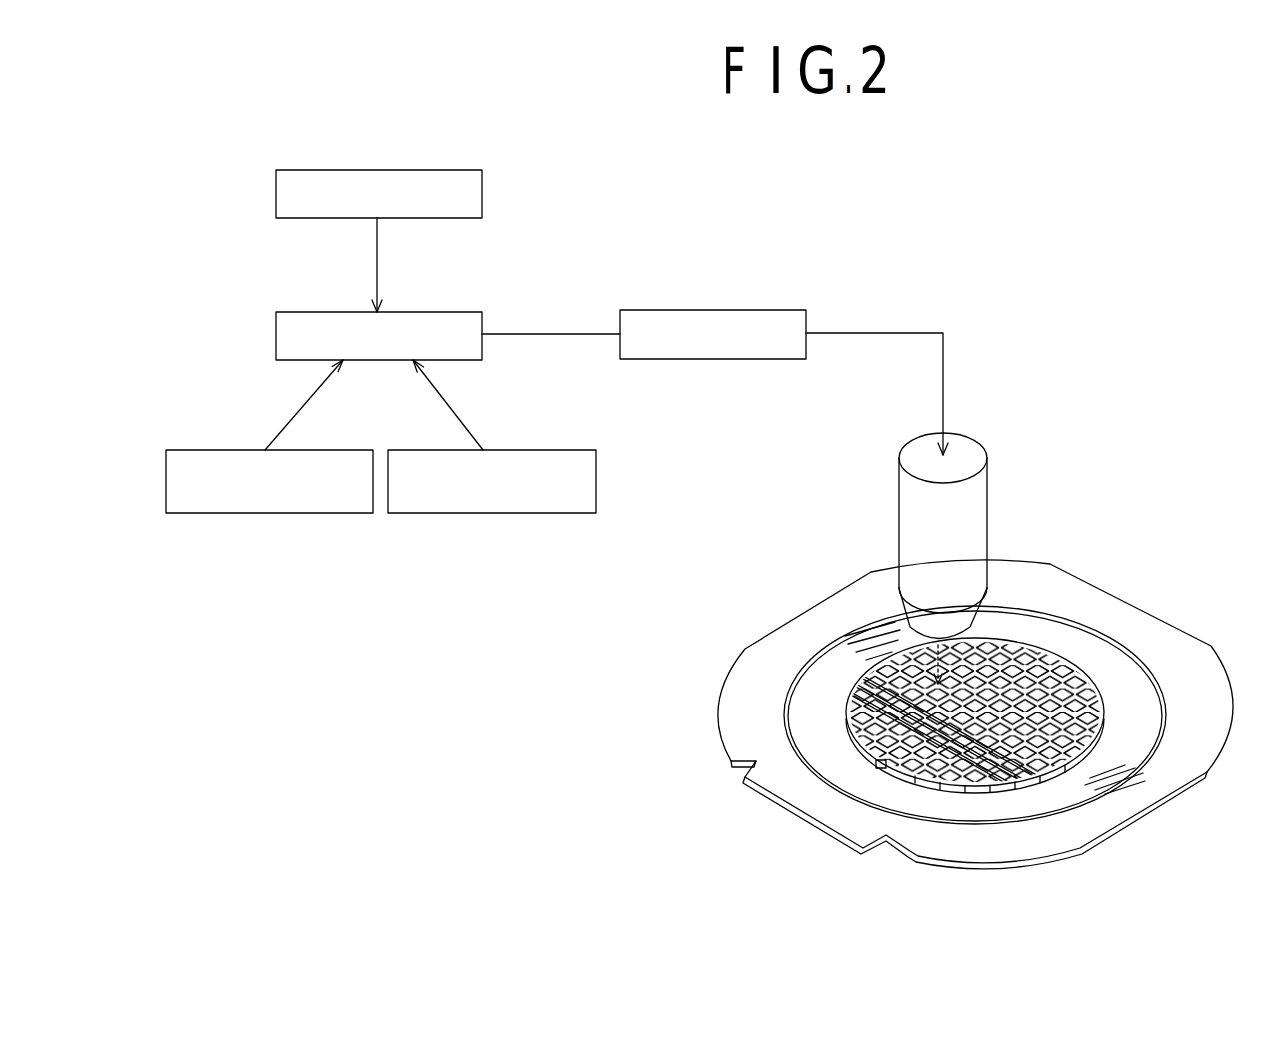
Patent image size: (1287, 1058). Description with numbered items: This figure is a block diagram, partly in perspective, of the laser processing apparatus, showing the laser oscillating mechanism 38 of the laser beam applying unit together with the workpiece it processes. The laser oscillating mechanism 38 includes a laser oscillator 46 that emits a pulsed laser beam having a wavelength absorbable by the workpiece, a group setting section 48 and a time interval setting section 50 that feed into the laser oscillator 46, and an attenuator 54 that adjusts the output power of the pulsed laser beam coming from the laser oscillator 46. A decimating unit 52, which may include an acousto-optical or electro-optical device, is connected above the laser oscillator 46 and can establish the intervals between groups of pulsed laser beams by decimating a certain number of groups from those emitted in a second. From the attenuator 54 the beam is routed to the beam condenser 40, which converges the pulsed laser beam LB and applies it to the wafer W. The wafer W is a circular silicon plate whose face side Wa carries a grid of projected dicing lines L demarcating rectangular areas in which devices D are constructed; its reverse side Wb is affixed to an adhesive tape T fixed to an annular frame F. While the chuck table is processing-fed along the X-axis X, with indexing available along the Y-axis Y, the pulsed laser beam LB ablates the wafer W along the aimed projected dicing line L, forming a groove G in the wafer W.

The laser oscillating mechanism 38 is at (205, 265).
The decimating unit 52 is at (478, 170).
The laser oscillator 46 is at (478, 312).
The attenuator 54 is at (752, 310).
The time interval setting section 50 is at (205, 450).
The group setting section 48 is at (538, 450).
The beam condenser 40 is at (905, 530).
The pulsed laser beam LB is at (935, 680).
The wafer W is at (1004, 636).
The devices D is at (1030, 654).
The projected dicing lines L is at (1042, 662).
The adhesive tape T is at (1143, 675).
The annular frame F is at (1212, 692).
The face side Wa is at (1097, 698).
The reverse side Wb is at (1029, 786).
The groove G is at (1008, 776).
The X-axis X is at (826, 877).
The Y-axis Y is at (1225, 806).